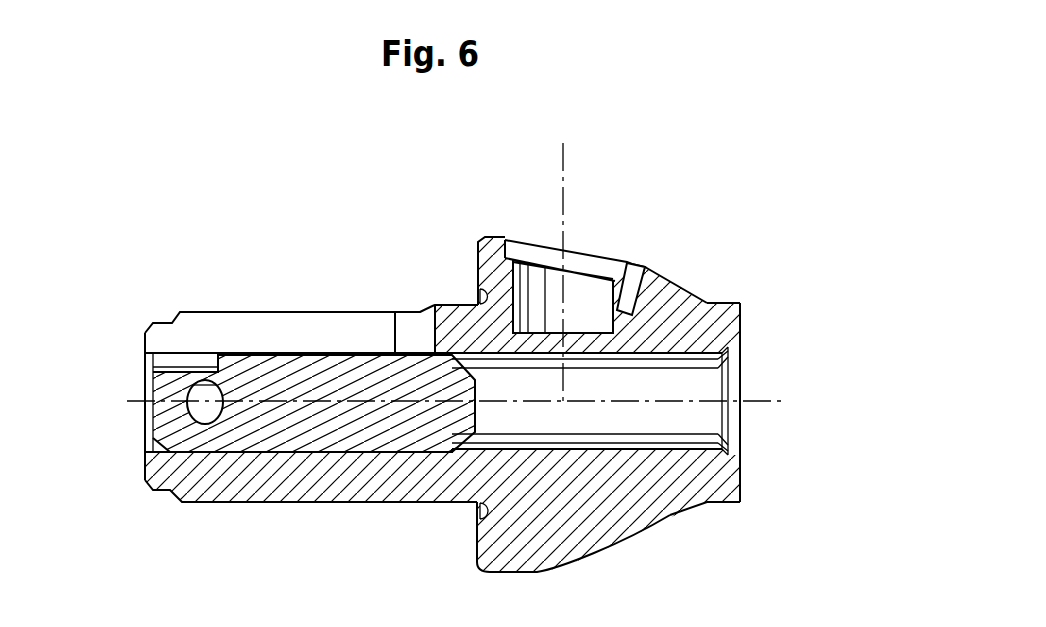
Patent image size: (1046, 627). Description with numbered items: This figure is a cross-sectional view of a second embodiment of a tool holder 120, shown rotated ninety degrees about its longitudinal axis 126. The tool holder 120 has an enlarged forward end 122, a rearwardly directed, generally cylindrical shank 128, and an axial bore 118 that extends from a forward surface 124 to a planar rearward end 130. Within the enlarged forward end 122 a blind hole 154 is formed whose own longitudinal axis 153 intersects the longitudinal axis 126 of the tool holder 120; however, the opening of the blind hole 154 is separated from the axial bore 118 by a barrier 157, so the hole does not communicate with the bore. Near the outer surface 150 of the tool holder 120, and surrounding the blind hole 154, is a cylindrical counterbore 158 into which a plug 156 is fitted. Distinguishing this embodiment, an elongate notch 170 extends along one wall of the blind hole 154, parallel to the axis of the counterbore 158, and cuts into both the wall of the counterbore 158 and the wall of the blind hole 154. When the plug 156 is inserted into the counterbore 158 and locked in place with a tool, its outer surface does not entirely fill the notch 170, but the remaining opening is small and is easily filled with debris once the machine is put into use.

The axial bore 118 is at (695, 452).
The tool holder 120 is at (427, 502).
The enlarged forward end 122 is at (638, 540).
The forward surface 124 is at (742, 312).
The longitudinal axis 126 is at (763, 401).
The shank 128 is at (267, 503).
The planar rearward end 130 is at (145, 337).
The outer surface 150 is at (630, 391).
The longitudinal axis 153 is at (560, 167).
The blind hole 154 is at (540, 325).
The plug 156 is at (543, 247).
The barrier 157 is at (592, 333).
The cylindrical counterbore 158 is at (517, 252).
The elongate notch 170 is at (638, 263).